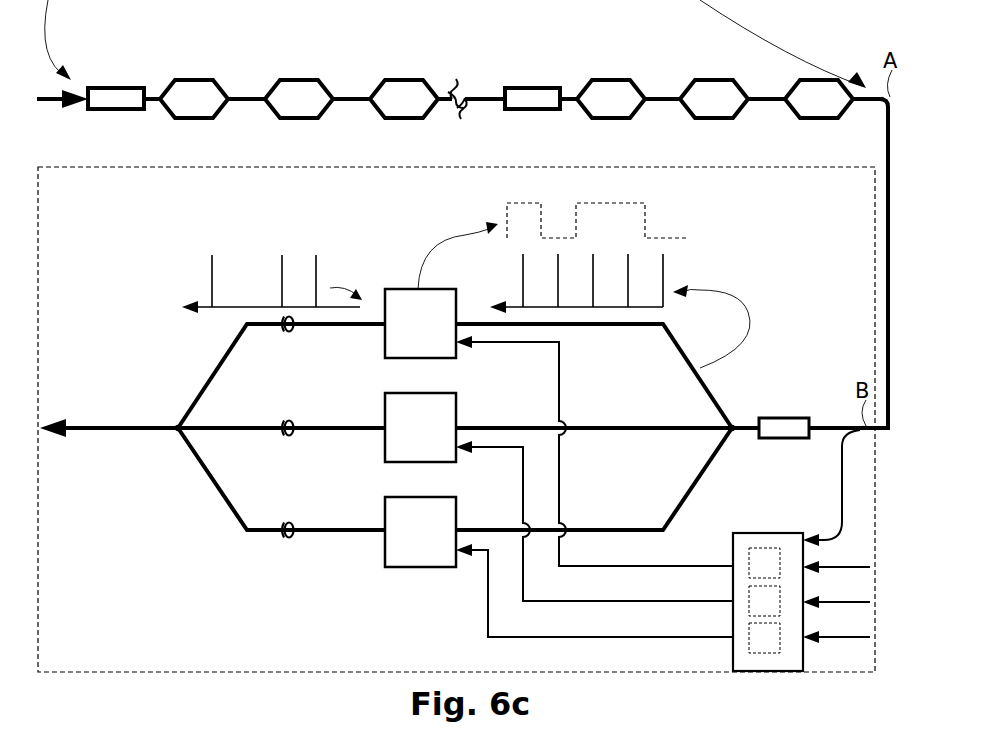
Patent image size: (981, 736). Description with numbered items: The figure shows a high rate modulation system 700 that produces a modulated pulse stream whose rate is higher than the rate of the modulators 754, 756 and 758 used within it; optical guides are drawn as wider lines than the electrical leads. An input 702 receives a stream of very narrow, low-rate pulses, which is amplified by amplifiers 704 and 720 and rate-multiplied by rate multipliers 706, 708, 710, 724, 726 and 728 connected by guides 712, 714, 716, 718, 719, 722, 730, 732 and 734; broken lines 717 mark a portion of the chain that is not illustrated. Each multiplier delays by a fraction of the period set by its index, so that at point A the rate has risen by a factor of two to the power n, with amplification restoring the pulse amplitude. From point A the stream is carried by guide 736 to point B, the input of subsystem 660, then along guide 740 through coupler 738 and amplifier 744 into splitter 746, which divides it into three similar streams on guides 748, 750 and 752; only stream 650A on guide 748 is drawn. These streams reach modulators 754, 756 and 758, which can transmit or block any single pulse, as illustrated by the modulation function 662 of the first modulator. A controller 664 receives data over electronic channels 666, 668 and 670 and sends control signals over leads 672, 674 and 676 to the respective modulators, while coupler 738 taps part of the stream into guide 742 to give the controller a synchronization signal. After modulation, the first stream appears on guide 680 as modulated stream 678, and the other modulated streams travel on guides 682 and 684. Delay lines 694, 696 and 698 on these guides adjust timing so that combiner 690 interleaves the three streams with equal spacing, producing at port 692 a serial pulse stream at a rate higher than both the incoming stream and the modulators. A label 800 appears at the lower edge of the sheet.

The high rate modulation system 700 is at (600, 38).
The input 702 is at (63, 108).
The amplifier 704 is at (118, 111).
The rate multiplier 706 is at (164, 118).
The rate multiplier 708 is at (270, 118).
The rate multiplier 710 is at (374, 118).
The guide 712 is at (158, 94).
The guide 714 is at (262, 93).
The guide 716 is at (358, 93).
The broken lines 717 is at (462, 116).
The guide 718 is at (450, 92).
The guide 719 is at (496, 95).
The amplifier 720 is at (516, 111).
The guide 722 is at (572, 94).
The rate multiplier 724 is at (584, 118).
The rate multiplier 726 is at (686, 118).
The rate multiplier 728 is at (792, 118).
The guide 730 is at (676, 92).
The guide 732 is at (782, 93).
The guide 734 is at (853, 104).
The guide 736 is at (886, 222).
The coupler 738 is at (870, 436).
The guide 740 is at (826, 418).
The guide 742 is at (838, 470).
The amplifier 744 is at (783, 440).
The splitter 746 is at (738, 448).
The guide 748 is at (678, 352).
The guide 750 is at (648, 436).
The guide 752 is at (688, 498).
The modulator 754 is at (450, 359).
The modulator 756 is at (444, 464).
The modulator 758 is at (392, 570).
The subsystem 660 is at (40, 318).
The modulation function 662 is at (650, 238).
The stream 650A is at (664, 278).
The modulated stream 678 is at (210, 275).
The guide 680 is at (216, 364).
The guide 682 is at (334, 438).
The guide 684 is at (336, 540).
The combiner 690 is at (176, 436).
The port 692 is at (96, 434).
The delay line 694 is at (288, 334).
The delay line 696 is at (288, 438).
The delay line 698 is at (288, 540).
The controller 664 is at (750, 688).
The electronic channel 666 is at (866, 572).
The electronic channel 668 is at (866, 607).
The electronic channel 670 is at (866, 642).
The lead 672 is at (646, 580).
The lead 674 is at (650, 618).
The lead 676 is at (650, 652).
The system 800 is at (882, 732).